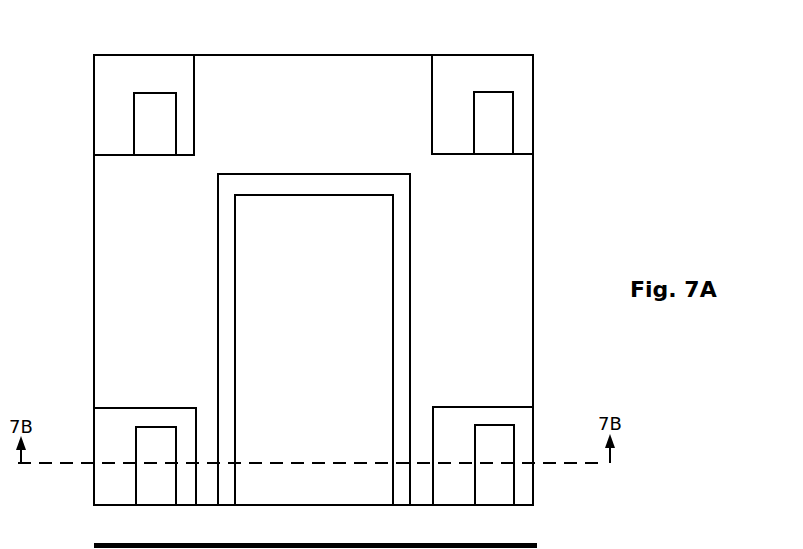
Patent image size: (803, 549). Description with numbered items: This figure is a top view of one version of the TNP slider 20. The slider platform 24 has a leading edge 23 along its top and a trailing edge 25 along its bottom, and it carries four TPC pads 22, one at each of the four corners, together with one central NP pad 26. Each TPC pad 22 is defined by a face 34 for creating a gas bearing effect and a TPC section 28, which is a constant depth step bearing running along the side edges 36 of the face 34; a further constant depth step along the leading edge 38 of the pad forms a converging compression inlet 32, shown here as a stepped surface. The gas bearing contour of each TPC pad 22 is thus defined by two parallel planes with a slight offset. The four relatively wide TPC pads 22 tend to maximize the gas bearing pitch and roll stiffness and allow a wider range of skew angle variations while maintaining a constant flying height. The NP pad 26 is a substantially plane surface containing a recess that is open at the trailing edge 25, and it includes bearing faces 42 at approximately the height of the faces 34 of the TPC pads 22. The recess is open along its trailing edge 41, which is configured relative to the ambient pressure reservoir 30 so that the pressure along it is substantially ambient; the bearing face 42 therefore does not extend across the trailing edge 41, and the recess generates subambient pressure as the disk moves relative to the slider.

The TNP slider 20 is at (50, 272).
The TPC pad 22 is at (94, 83).
The leading edge 23 is at (341, 55).
The slider platform 24 is at (533, 203).
The trailing edge 25 is at (362, 505).
The NP pad 26 is at (315, 493).
The TPC section 28 is at (525, 114).
The ambient pressure reservoir 30 is at (107, 332).
The compression inlet 32 is at (492, 78).
The face 34 is at (508, 145).
The side edges 36 is at (512, 122).
The leading edge 38 is at (494, 92).
The trailing edge 41 is at (313, 517).
The bearing face 42 is at (228, 493).